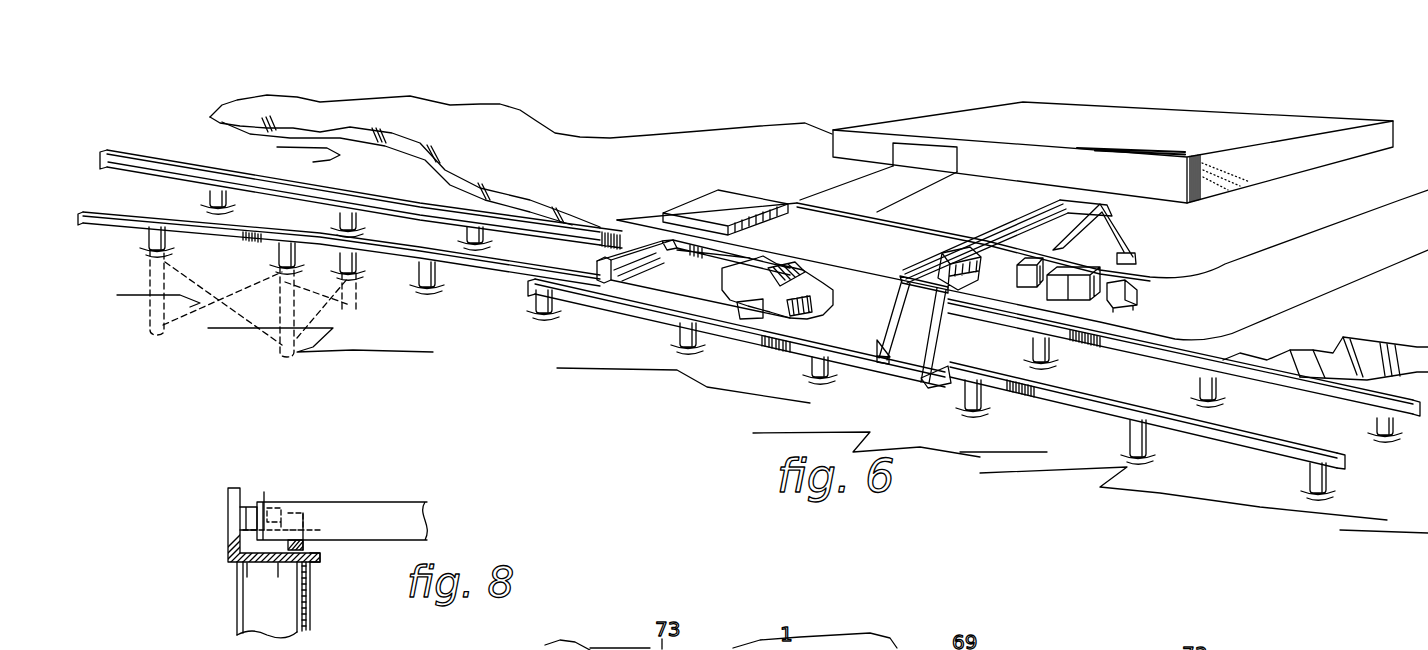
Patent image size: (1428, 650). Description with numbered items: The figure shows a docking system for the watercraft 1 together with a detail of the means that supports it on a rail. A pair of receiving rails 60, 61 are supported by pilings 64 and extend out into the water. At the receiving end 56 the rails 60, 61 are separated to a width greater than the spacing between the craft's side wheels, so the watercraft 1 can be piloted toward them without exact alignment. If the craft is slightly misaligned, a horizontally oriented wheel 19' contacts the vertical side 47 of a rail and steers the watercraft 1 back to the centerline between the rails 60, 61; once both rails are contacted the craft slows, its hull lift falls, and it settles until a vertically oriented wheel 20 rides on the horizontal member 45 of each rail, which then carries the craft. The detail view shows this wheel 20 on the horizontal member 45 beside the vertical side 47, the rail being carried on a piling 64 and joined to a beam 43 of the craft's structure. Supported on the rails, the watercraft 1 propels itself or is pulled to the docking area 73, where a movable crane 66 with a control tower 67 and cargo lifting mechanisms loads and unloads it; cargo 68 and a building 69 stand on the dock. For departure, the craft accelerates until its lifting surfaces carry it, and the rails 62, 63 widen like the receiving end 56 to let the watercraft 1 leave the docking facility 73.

In FIG. 6, the watercraft 1 is at (667, 289).
In FIG. 8, the horizontally oriented wheel 19' is at (272, 487).
In FIG. 8, the vertically oriented wheel 20 is at (322, 548).
In FIG. 8, the beam 43 is at (360, 501).
In FIG. 8, the horizontal member 45 is at (320, 563).
In FIG. 8, the vertical side 47 is at (228, 512).
In FIG. 6, the receiving end 56 is at (350, 214).
In FIG. 6, the receiving rail 60 is at (217, 178).
In FIG. 6, the receiving rail 61 is at (153, 178).
In FIG. 6, the rail 62 is at (1160, 410).
In FIG. 6, the rail 63 is at (1133, 362).
In FIG. 6, the piling 64 is at (278, 253).
In FIG. 8, the piling 64 is at (237, 583).
In FIG. 6, the movable crane 66 is at (948, 341).
In FIG. 6, the control tower 67 is at (958, 250).
In FIG. 6, the cargo vehicles 68 is at (1127, 281).
In FIG. 6, the warehouse building 69 is at (1148, 112).
In FIG. 6, the docking area 73 is at (880, 254).